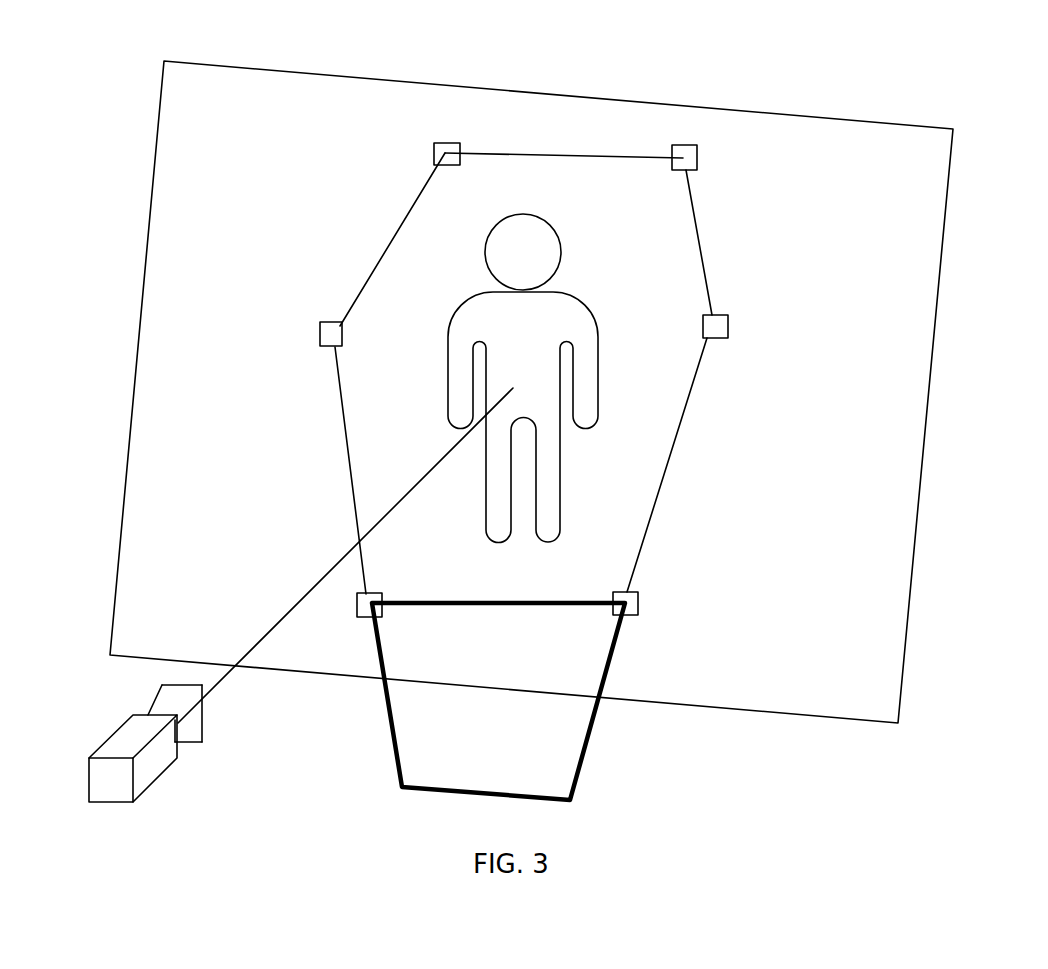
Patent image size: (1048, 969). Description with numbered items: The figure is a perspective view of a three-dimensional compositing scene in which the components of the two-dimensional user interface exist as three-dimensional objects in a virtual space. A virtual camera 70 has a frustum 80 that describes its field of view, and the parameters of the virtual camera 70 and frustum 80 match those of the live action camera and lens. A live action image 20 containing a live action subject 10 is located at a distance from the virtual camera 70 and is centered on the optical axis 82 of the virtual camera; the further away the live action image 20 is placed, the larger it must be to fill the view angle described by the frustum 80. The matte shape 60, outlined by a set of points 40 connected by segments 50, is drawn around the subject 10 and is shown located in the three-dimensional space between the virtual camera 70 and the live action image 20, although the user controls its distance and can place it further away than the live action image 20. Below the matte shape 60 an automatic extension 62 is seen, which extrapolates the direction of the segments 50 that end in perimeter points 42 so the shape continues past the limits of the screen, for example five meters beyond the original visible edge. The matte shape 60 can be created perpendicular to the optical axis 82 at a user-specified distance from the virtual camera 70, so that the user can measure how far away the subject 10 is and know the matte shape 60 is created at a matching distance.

The live action subject 10 is at (557, 293).
The live action image 20 is at (913, 132).
The points 40 is at (730, 323).
The perimeter points 42 is at (373, 606).
The segments 50 is at (693, 384).
The matte shape 60 is at (530, 195).
The automatic extension 62 is at (583, 768).
The virtual camera 70 is at (148, 785).
The frustum 80 is at (203, 720).
The optical axis 82 is at (327, 575).